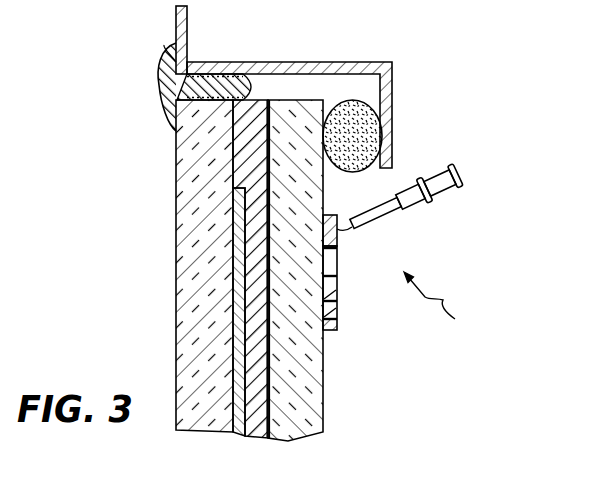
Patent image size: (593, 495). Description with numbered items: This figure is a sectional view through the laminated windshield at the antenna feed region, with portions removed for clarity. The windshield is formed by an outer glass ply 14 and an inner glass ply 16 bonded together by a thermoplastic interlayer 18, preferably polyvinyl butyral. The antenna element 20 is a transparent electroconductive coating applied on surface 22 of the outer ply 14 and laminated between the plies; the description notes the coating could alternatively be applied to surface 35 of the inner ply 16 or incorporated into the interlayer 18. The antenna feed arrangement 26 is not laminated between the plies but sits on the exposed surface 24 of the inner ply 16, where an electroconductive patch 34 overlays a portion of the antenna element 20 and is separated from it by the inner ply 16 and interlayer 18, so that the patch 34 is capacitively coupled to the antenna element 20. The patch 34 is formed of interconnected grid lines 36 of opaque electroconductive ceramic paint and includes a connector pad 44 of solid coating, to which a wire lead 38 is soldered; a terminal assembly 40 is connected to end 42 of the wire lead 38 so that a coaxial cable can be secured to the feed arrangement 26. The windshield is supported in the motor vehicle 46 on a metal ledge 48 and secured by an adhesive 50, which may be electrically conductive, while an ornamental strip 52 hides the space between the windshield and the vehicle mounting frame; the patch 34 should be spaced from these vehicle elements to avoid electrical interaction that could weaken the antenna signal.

The outer glass ply 14 is at (200, 432).
The inner glass ply 16 is at (312, 436).
The thermoplastic interlayer 18 is at (255, 438).
The antenna element 20 is at (232, 349).
The surface of outer ply 22 is at (243, 182).
The surface of inner ply 24 is at (323, 383).
The antenna feed arrangement 26 is at (443, 305).
The electroconductive patch 34 is at (25, 14).
The surface of inner ply 35 is at (268, 152).
The grid lines 36 is at (338, 274).
The wire lead 38 is at (370, 230).
The terminal assembly 40 is at (415, 201).
The end of wire lead 42 is at (410, 212).
The connector pad 44 is at (330, 213).
The motor vehicle 46 is at (188, 14).
The metal ledge 48 is at (393, 82).
The adhesive 50 is at (357, 102).
The ornamental strip 52 is at (160, 98).